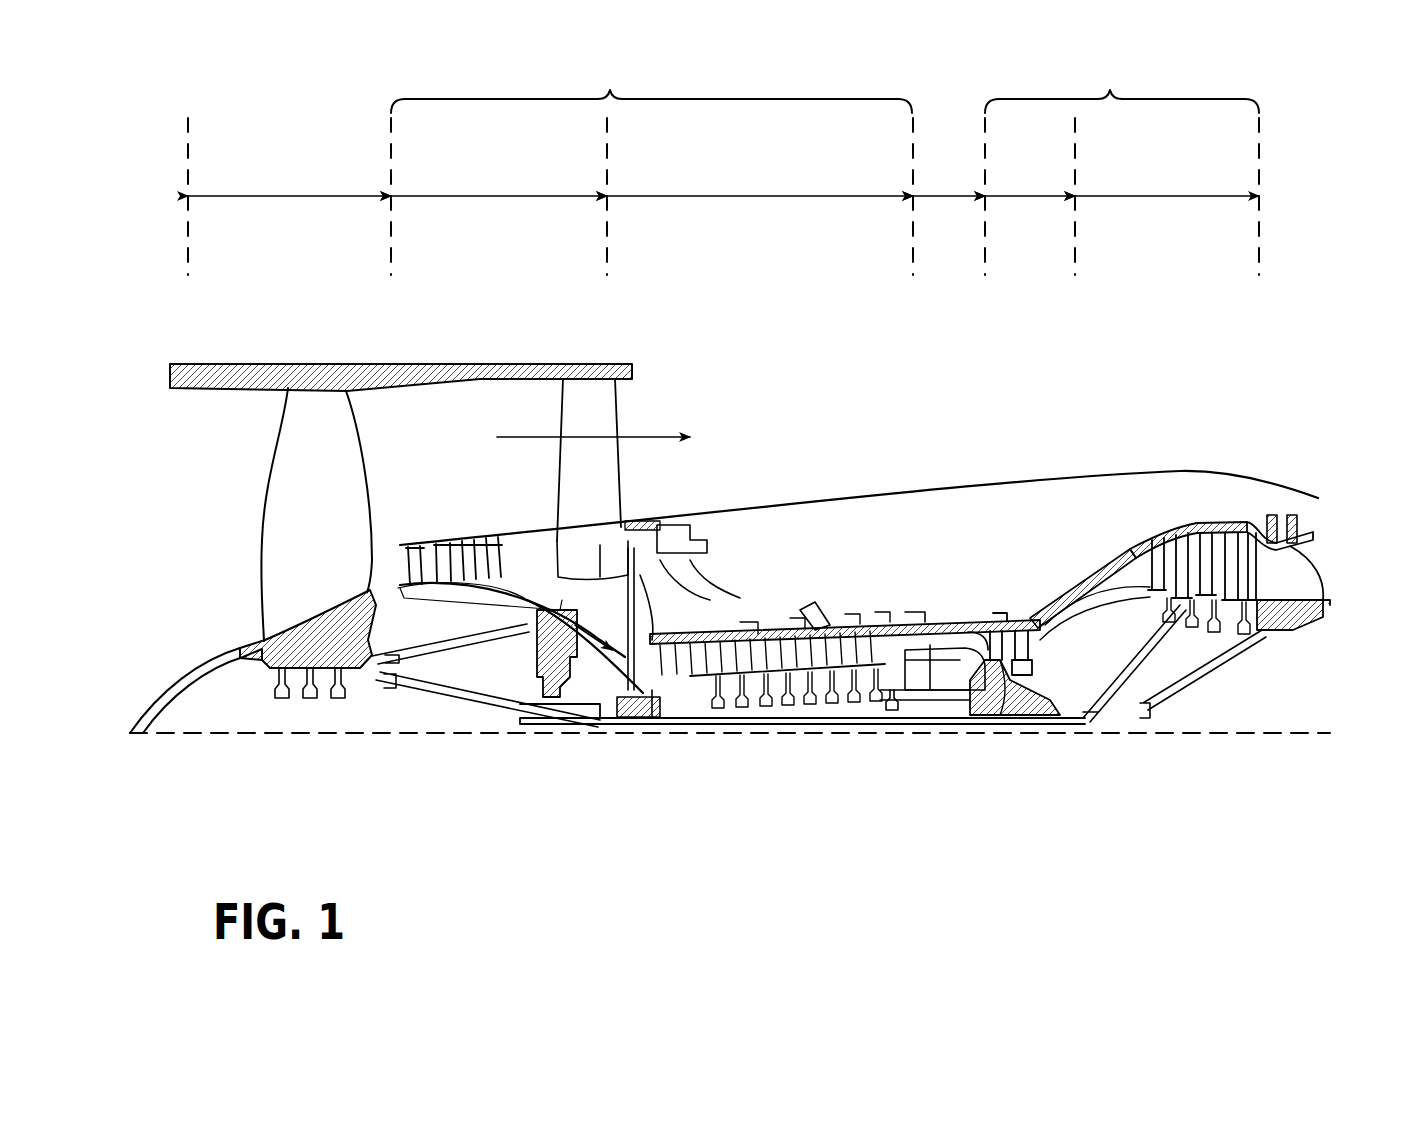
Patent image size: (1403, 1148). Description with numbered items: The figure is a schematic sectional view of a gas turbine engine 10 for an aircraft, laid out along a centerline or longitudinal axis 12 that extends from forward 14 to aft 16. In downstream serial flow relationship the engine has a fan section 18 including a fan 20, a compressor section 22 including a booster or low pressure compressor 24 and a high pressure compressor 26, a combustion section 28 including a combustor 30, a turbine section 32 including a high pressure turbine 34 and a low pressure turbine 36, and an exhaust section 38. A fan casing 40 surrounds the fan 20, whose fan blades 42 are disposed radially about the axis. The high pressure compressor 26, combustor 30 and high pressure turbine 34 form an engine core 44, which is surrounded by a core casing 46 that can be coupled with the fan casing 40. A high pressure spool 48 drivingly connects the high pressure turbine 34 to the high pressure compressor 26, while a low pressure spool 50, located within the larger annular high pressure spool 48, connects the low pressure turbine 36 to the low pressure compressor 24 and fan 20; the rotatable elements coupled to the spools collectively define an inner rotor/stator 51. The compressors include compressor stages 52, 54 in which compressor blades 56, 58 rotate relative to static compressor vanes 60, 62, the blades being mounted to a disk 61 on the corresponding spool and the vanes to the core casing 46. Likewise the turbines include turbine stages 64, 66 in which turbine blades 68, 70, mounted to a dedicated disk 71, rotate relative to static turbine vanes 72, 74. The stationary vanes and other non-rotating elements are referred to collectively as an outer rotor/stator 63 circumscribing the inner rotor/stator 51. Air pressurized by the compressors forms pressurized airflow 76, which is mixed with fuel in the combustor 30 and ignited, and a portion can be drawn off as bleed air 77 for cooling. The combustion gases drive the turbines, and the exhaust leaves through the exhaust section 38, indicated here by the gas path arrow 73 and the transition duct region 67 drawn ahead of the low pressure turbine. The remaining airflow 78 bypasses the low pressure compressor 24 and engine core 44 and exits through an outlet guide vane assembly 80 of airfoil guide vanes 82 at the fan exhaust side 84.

The gas turbine engine 10 is at (940, 358).
The longitudinal axis 12 is at (290, 733).
The forward 14 is at (135, 499).
The aft 16 is at (1348, 584).
The fan section 18 is at (289, 196).
The fan 20 is at (228, 577).
The compressor section 22 is at (651, 86).
The low pressure compressor 24 is at (499, 196).
The high pressure compressor 26 is at (760, 196).
The combustion section 28 is at (949, 196).
The combustor 30 is at (950, 615).
The turbine section 32 is at (1122, 86).
The high pressure turbine 34 is at (1030, 196).
The low pressure turbine 36 is at (1167, 196).
The exhaust section 38 is at (1330, 545).
The fan casing 40 is at (432, 364).
The fan blades 42 is at (345, 444).
The engine core 44 is at (888, 537).
The core casing 46 is at (1120, 548).
The high pressure spool 48 is at (925, 702).
The low pressure spool 50 is at (542, 724).
The inner rotor/stator 51 is at (797, 737).
The compressor stages 52 is at (502, 552).
The compressor stages 54 is at (748, 533).
The compressor blades 56 is at (460, 534).
The compressor blades 58 is at (670, 645).
The static compressor vanes 60 is at (407, 546).
The disk 61 is at (420, 588).
The static compressor vanes 62 is at (650, 625).
The outer rotor/stator 63 is at (662, 717).
The turbine stages 64 is at (1013, 592).
The turbine stages 66 is at (1228, 521).
The transition duct 67 is at (1060, 575).
The turbine blades 68 is at (1025, 613).
The turbine blades 70 is at (1240, 532).
The disk 71 is at (1000, 690).
The static turbine vanes 72 is at (987, 613).
The combustion gas flow 73 is at (968, 600).
The static turbine vanes 74 is at (1222, 532).
The pressurized airflow 76 is at (608, 628).
The bleed air 77 is at (778, 612).
The airflow 78 is at (522, 437).
The outlet guide vane assembly 80 is at (633, 487).
The airfoil guide vanes 82 is at (567, 474).
The fan exhaust side 84 is at (658, 397).